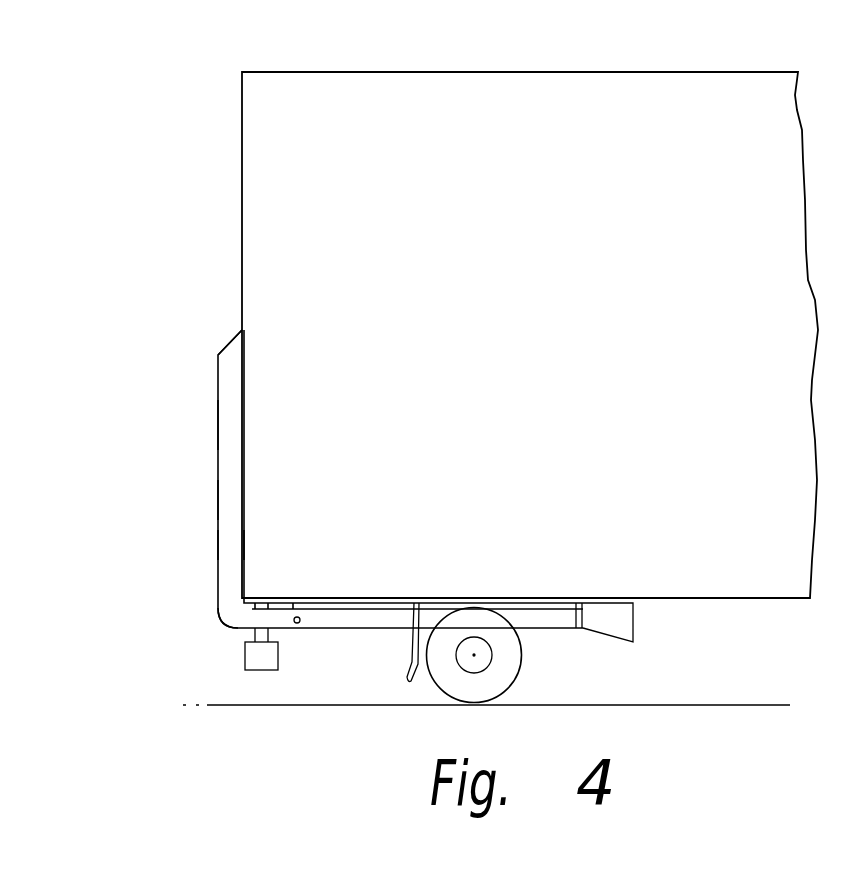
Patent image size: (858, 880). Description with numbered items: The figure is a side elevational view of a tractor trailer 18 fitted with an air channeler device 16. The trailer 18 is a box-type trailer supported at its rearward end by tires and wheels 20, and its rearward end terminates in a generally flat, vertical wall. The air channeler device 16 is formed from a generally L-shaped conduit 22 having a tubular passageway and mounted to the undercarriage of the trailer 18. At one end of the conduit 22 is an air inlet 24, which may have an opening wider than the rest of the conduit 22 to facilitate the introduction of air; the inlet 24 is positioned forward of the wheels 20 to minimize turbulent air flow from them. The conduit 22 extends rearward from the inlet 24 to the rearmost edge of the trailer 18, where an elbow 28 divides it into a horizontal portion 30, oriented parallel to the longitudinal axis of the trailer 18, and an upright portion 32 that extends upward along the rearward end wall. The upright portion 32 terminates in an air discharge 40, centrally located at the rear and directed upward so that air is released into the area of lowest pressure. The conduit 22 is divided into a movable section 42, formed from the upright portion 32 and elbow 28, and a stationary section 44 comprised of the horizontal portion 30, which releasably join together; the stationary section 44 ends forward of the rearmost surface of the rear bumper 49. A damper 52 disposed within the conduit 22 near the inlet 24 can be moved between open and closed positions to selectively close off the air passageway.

The tractor trailer 18 is at (565, 69).
The air discharge 40 is at (241, 333).
The movable section 42 is at (218, 426).
The air channeler device 16 is at (201, 496).
The upright portion 32 is at (228, 541).
The conduit 22 is at (218, 592).
The elbow 28 is at (230, 618).
The rear bumper 49 is at (258, 668).
The damper 52 is at (283, 620).
The horizontal portion 30 is at (547, 583).
The stationary section 44 is at (565, 612).
The air inlet 24 is at (637, 620).
The wheels 20 is at (521, 670).